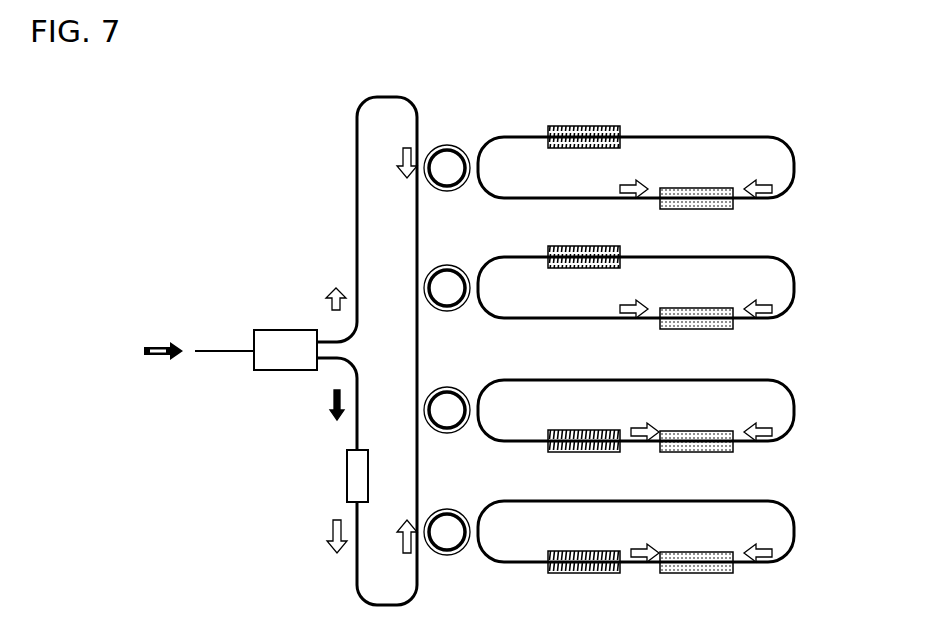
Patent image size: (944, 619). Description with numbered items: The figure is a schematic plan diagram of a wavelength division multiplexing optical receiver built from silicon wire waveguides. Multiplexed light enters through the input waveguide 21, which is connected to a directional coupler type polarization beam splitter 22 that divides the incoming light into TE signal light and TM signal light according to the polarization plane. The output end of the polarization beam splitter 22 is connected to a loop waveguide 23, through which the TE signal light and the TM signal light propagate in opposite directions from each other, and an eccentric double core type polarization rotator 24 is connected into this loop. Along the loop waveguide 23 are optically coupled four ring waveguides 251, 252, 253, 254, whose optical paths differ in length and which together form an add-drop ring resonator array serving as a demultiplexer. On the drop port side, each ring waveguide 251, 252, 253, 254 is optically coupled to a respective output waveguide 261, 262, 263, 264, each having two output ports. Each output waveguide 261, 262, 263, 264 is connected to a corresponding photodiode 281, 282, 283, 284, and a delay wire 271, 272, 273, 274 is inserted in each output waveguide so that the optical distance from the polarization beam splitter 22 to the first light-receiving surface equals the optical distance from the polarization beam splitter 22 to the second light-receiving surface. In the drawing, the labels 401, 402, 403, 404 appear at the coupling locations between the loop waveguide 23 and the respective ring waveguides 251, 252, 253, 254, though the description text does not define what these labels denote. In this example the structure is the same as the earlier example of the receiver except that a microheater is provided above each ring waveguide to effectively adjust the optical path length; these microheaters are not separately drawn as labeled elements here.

The input waveguide 21 is at (222, 350).
The polarization beam splitter 22 is at (290, 330).
The loop waveguide 23 is at (356, 202).
The polarization rotator 24 is at (349, 474).
The ring waveguide 251 is at (447, 145).
The output waveguide 261 is at (797, 162).
The delay wire 271 is at (587, 126).
The photodiode 281 is at (705, 188).
The coupling point 401 is at (447, 191).
The ring waveguide 252 is at (447, 265).
The output waveguide 262 is at (797, 282).
The delay wire 272 is at (587, 246).
The photodiode 282 is at (705, 308).
The coupling point 402 is at (447, 311).
The ring waveguide 253 is at (447, 387).
The output waveguide 263 is at (797, 404).
The delay wire 273 is at (587, 430).
The photodiode 283 is at (705, 431).
The photodiode 284 is at (705, 552).
The coupling point 403 is at (447, 433).
The ring waveguide 254 is at (447, 509).
The output waveguide 264 is at (797, 526).
The delay wire 274 is at (587, 551).
The coupling point 404 is at (447, 555).